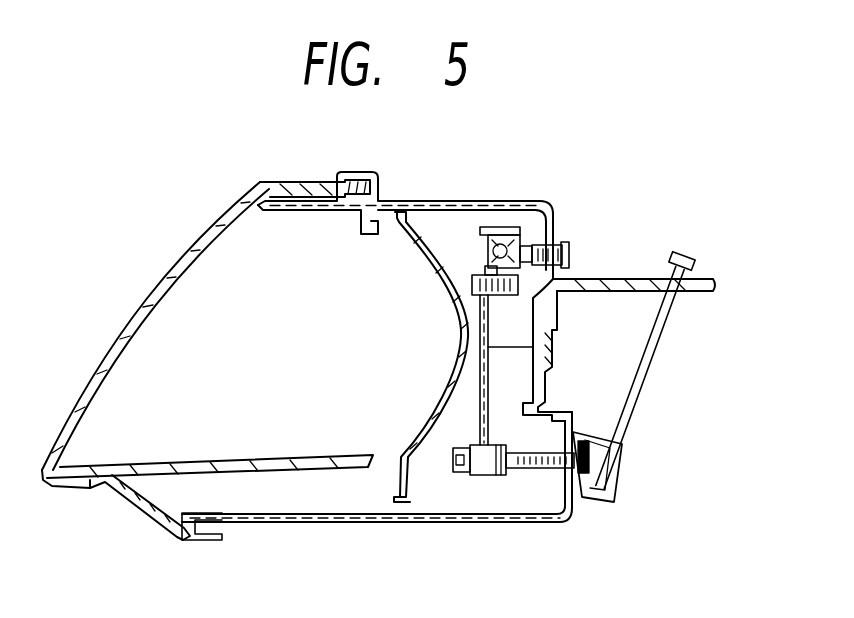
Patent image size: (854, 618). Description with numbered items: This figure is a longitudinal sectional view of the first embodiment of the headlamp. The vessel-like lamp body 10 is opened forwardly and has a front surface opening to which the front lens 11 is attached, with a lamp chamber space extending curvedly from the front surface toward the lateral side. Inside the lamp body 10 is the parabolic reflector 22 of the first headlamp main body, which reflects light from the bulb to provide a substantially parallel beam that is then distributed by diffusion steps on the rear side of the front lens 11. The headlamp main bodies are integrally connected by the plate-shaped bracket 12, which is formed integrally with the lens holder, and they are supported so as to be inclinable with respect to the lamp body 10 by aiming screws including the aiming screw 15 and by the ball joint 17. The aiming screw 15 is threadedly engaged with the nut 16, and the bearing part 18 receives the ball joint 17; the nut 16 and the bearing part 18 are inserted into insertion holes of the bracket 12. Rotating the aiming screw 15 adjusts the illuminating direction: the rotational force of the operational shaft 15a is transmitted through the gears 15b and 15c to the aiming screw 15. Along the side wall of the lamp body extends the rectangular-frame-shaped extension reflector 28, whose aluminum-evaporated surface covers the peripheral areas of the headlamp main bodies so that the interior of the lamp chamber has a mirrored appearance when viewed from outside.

The lamp body 10 is at (480, 202).
The front lens 11 is at (234, 200).
The plate-shaped bracket 12 is at (553, 333).
The aiming screw 15 is at (523, 470).
The operational shaft 15a is at (636, 402).
The gear 15b is at (614, 472).
The gear 15c is at (573, 503).
The nut 16 is at (476, 477).
The ball joint 17 is at (533, 242).
The bearing part 18 is at (496, 228).
The parabolic reflector 22 is at (430, 240).
The extension reflector 28 is at (149, 470).